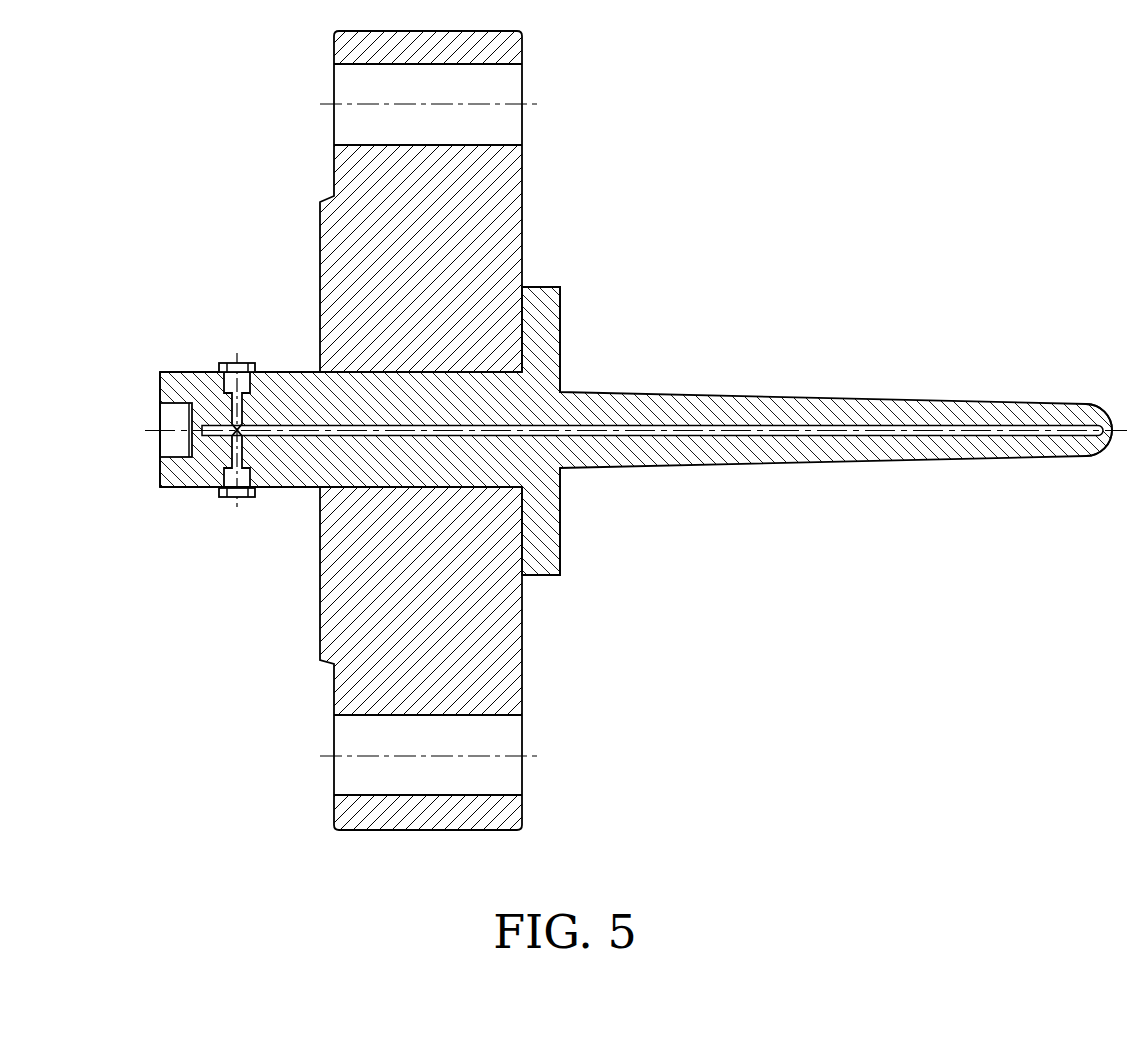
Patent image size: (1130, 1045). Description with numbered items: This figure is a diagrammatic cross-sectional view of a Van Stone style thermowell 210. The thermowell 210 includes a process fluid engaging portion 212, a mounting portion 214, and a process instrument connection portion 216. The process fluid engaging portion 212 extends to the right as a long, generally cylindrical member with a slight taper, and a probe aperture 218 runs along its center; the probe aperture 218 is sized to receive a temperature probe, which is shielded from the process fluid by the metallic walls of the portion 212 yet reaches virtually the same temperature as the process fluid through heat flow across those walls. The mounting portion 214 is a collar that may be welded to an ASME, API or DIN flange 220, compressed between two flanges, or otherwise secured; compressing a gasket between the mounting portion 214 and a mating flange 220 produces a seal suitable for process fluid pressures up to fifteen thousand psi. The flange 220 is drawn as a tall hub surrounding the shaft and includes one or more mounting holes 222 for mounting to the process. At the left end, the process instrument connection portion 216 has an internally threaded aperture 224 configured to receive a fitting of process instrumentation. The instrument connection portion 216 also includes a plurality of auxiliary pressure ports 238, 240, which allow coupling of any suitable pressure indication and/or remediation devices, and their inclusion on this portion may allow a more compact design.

The thermowell 210 is at (805, 396).
The process fluid engaging portion 212 is at (978, 403).
The mounting portion 214 is at (535, 286).
The process instrument connection portion 216 is at (160, 488).
The probe aperture 218 is at (937, 435).
The flange 220 is at (457, 830).
The mounting holes 222 is at (377, 65).
The internally threaded aperture 224 is at (183, 455).
The auxiliary pressure port 238 is at (219, 366).
The auxiliary pressure port 240 is at (218, 497).